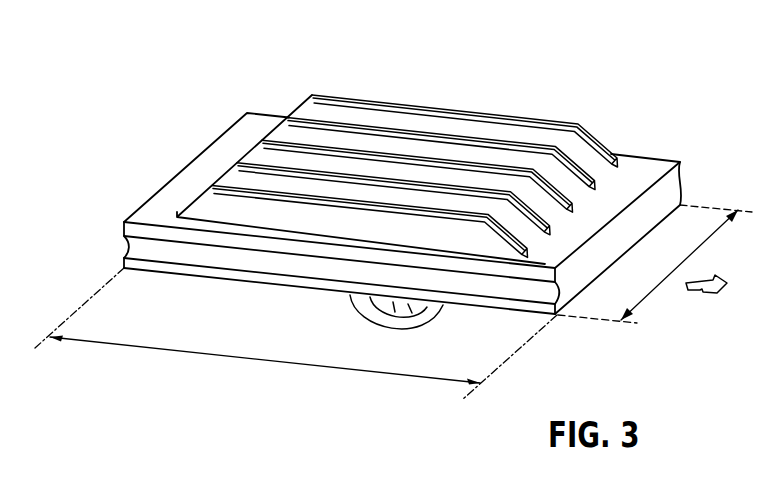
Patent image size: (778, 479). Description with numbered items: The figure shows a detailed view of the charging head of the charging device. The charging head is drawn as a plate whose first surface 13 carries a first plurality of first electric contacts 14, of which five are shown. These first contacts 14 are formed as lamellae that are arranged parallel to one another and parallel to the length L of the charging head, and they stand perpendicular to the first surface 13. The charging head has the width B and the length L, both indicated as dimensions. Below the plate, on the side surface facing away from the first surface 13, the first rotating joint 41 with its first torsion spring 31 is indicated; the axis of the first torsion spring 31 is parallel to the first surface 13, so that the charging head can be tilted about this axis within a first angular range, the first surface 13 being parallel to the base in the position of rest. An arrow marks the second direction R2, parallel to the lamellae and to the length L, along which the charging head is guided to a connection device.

The first surface 13 is at (256, 122).
The first electric contacts 14 is at (415, 131).
The first rotating joint 41 is at (366, 312).
The first torsion spring 31 is at (428, 311).
The length L is at (296, 334).
The width B is at (655, 264).
The second direction R2 is at (702, 293).